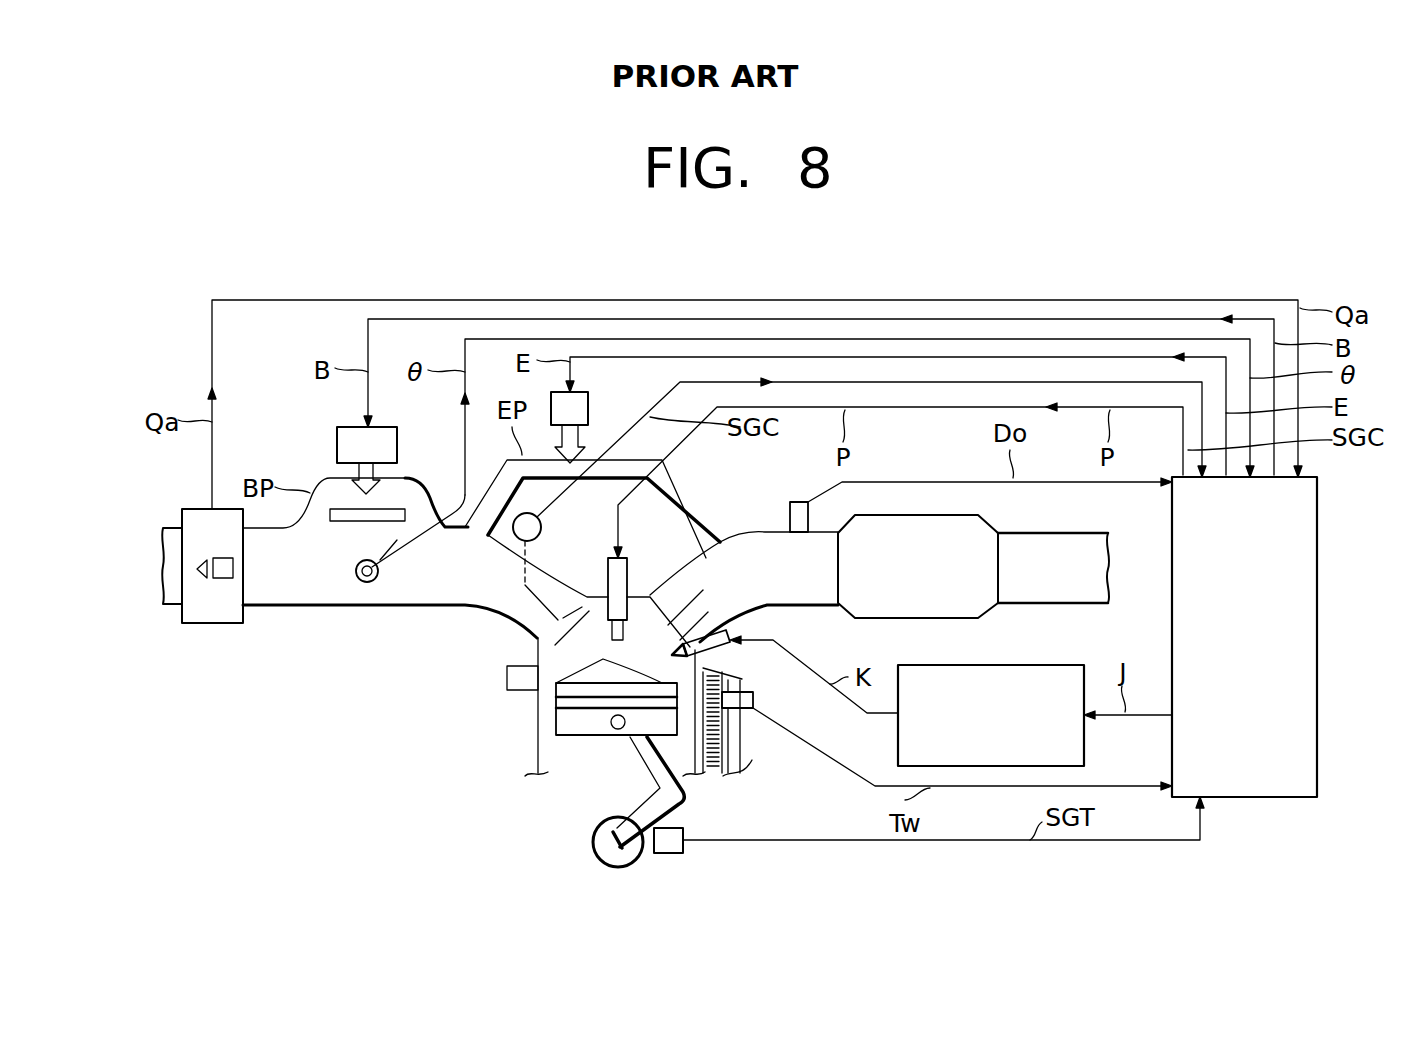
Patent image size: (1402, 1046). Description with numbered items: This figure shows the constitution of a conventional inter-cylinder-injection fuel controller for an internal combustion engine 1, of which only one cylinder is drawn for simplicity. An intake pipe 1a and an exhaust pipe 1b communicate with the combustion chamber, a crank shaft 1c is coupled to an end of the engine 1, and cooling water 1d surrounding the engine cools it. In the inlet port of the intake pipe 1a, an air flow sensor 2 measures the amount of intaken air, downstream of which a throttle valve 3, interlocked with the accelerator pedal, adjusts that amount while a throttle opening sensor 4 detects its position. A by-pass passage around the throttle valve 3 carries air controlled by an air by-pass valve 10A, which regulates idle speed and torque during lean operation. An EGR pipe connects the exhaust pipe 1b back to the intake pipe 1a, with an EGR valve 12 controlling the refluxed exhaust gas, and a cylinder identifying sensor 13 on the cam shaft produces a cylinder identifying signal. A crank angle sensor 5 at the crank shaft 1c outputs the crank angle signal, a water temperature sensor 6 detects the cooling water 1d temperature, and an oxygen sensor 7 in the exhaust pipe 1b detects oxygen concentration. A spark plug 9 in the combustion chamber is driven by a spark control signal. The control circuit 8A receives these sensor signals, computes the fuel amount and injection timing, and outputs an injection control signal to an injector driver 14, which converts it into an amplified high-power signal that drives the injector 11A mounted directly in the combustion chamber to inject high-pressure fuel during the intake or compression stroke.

The internal combustion engine 1 is at (745, 748).
The intake pipe 1a is at (383, 607).
The exhaust pipe 1b is at (1032, 606).
The crank shaft 1c is at (593, 842).
The cooling water 1d is at (712, 776).
The air flow sensor 2 is at (210, 625).
The throttle valve 3 is at (355, 587).
The throttle opening sensor 4 is at (381, 569).
The crank angle sensor 5 is at (670, 856).
The water temperature sensor 6 is at (755, 702).
The oxygen sensor 7 is at (790, 515).
The control circuit 8A is at (1320, 718).
The spark plug 9 is at (629, 567).
The air by-pass valve 10A is at (337, 440).
The injector 11A is at (742, 623).
The EGR valve 12 is at (589, 412).
The cylinder identifying sensor 13 is at (542, 525).
The injector driver 14 is at (1086, 745).